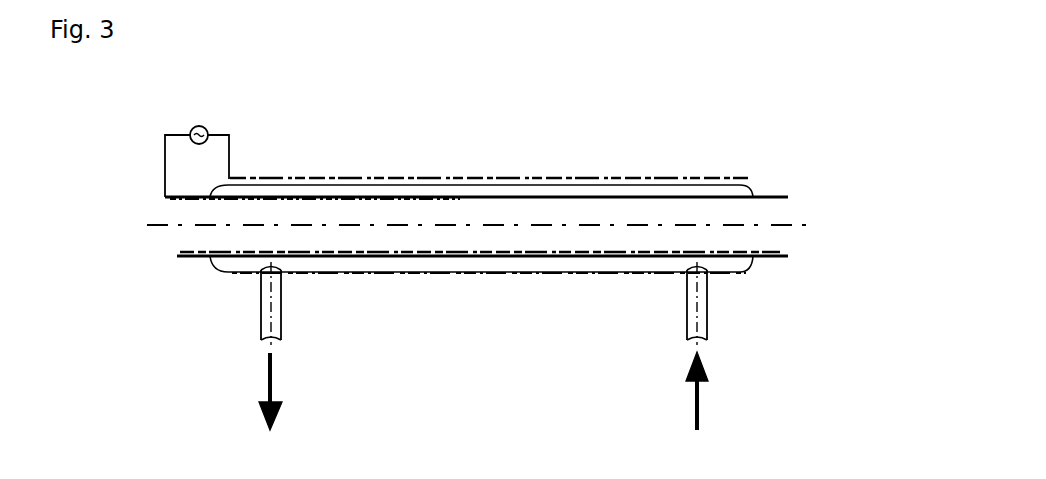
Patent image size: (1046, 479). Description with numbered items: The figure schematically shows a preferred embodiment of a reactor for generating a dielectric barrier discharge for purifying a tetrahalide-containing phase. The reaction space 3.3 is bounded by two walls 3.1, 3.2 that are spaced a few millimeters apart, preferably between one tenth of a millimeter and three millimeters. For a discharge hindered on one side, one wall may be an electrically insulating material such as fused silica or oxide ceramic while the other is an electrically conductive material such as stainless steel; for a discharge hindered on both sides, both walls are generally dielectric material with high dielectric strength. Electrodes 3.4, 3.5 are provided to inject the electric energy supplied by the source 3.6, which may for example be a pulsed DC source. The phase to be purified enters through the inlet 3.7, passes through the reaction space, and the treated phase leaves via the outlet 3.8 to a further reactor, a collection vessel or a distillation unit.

The wall of the reaction space 3.1 is at (772, 196).
The wall of the reaction space 3.2 is at (695, 181).
The reaction space 3.3 is at (612, 190).
The electrode 3.4 is at (526, 178).
The electrode 3.5 is at (426, 200).
The AC source 3.6 is at (207, 131).
The inlet for the starting material phase 3.7 is at (697, 363).
The outlet for the treated phase 3.8 is at (270, 363).